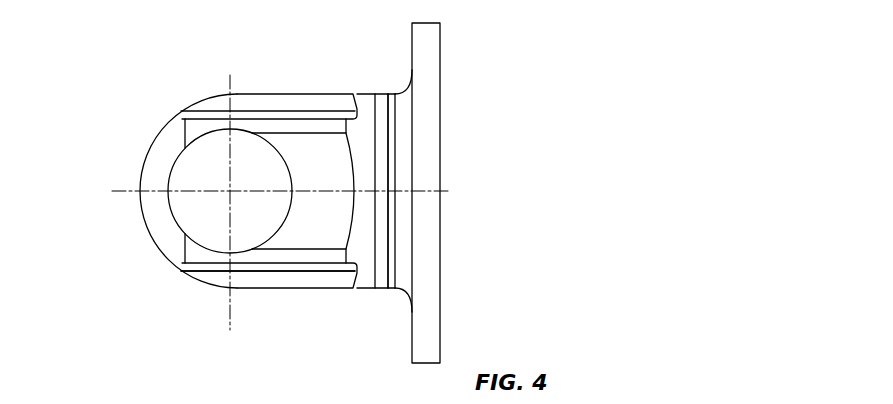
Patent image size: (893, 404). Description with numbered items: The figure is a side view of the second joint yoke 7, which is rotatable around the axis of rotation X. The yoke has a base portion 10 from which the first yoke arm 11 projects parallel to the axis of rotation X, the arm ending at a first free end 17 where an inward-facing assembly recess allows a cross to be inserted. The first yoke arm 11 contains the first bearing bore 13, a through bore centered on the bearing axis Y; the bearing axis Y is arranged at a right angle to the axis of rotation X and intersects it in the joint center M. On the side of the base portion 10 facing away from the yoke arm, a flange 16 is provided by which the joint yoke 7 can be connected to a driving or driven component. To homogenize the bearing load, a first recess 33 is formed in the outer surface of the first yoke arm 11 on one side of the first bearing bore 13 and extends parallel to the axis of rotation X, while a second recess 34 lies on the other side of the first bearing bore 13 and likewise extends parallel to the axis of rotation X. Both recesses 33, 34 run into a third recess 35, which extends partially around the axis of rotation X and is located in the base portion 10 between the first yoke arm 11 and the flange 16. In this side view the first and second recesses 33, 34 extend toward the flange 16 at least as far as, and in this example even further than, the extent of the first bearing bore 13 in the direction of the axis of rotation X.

The second joint yoke 7 is at (478, 98).
The base portion 10 is at (378, 182).
The first yoke arm 11 is at (330, 213).
The first bearing bore 13 is at (257, 136).
The flange 16 is at (423, 152).
The first free end 17 is at (140, 200).
The first recess 33 is at (283, 112).
The second recess 34 is at (285, 274).
The third recess 35 is at (387, 268).
The axis of rotation X is at (321, 188).
The bearing axis Y is at (235, 238).
The joint center M is at (226, 200).